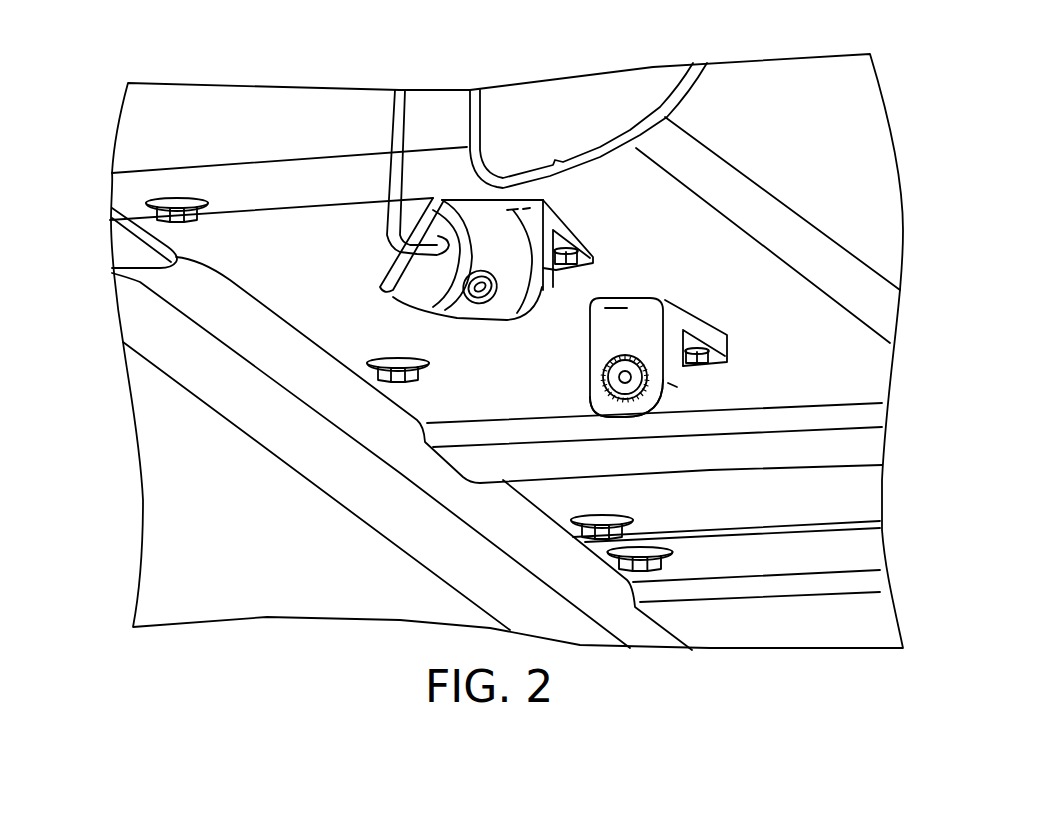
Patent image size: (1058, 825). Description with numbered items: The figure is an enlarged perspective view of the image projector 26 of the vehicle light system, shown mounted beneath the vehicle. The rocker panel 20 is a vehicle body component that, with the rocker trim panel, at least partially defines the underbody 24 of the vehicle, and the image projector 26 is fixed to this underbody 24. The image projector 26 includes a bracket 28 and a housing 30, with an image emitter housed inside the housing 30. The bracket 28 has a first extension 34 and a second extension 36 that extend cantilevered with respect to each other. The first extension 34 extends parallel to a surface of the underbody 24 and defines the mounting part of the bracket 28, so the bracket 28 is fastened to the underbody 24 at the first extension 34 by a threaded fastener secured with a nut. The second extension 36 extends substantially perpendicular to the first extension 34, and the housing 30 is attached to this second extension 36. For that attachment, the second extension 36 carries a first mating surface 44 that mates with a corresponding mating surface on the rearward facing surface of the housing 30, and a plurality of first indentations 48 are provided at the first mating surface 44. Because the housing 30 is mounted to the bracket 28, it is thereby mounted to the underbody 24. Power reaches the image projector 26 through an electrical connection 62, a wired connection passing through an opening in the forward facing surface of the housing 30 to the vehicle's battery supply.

The rocker panel 20 is at (787, 310).
The underbody 24 is at (92, 209).
The image projector 26 is at (349, 327).
The bracket 28 is at (638, 336).
The housing 30 is at (352, 257).
The first extension 34 is at (707, 332).
The second extension 36 is at (637, 417).
The first mating surface 44 is at (605, 337).
The first indentations 48 is at (615, 378).
The electrical connection 62 is at (394, 123).